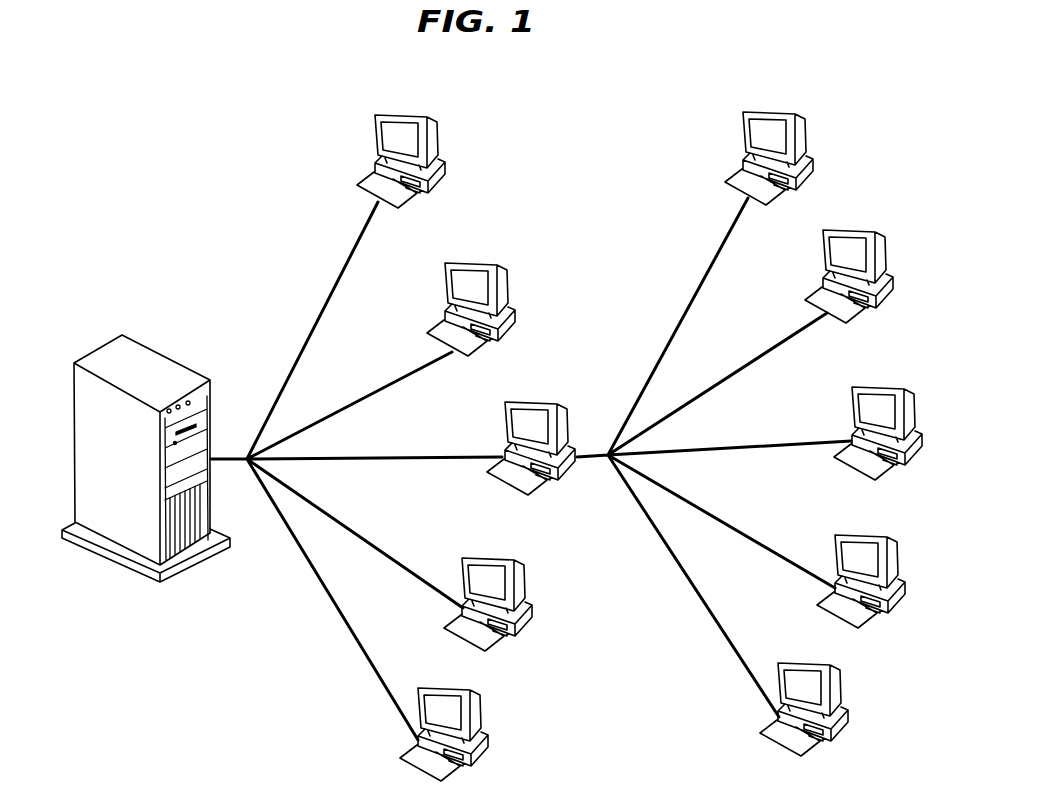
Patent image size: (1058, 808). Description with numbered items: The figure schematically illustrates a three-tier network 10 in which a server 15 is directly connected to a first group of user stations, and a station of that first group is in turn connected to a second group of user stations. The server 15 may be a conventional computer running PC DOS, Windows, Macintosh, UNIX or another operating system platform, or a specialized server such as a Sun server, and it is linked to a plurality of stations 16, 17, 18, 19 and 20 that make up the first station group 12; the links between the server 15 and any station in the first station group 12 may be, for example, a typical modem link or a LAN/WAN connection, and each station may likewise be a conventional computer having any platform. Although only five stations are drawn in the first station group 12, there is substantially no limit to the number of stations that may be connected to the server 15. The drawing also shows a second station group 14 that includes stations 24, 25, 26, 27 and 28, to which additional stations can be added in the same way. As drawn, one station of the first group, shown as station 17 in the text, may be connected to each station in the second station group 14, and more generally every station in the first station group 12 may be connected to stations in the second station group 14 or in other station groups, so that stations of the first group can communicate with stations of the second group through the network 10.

The network 10 is at (141, 151).
The first station group 12 is at (412, 96).
The second station group 14 is at (781, 90).
The server 15 is at (98, 348).
The station 16 is at (376, 140).
The station 17 is at (447, 290).
The station 18 is at (506, 426).
The station 19 is at (490, 557).
The station 20 is at (482, 708).
The station 24 is at (806, 135).
The station 25 is at (867, 230).
The station 26 is at (895, 387).
The station 27 is at (890, 535).
The station 28 is at (843, 690).